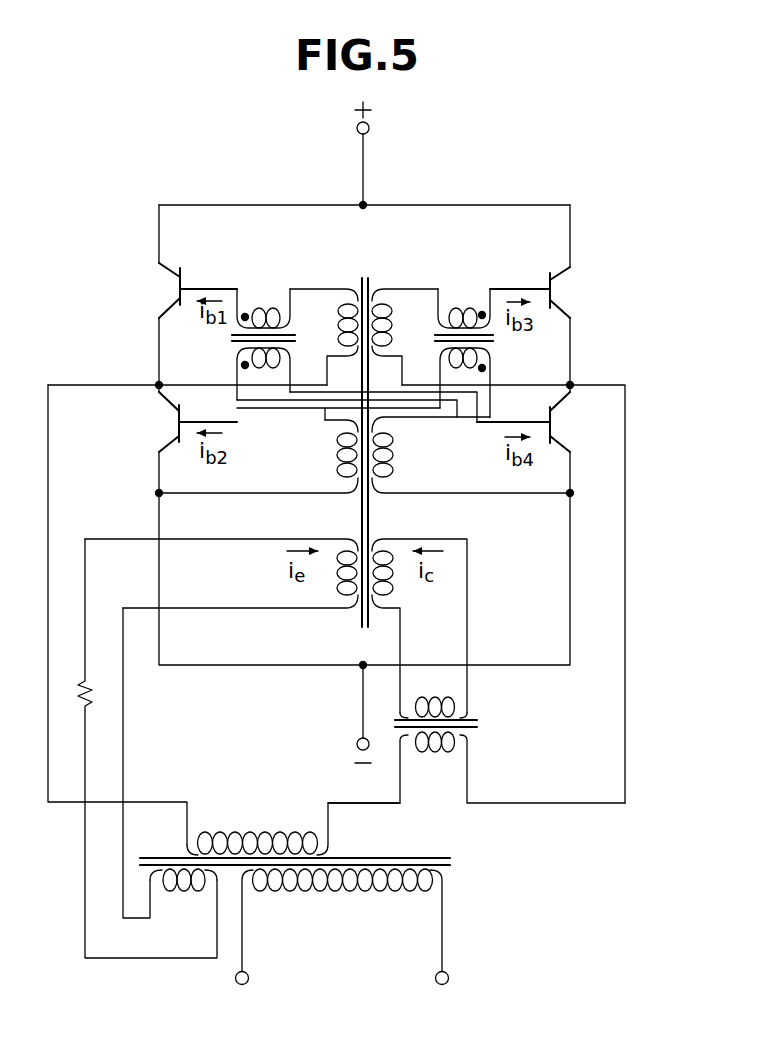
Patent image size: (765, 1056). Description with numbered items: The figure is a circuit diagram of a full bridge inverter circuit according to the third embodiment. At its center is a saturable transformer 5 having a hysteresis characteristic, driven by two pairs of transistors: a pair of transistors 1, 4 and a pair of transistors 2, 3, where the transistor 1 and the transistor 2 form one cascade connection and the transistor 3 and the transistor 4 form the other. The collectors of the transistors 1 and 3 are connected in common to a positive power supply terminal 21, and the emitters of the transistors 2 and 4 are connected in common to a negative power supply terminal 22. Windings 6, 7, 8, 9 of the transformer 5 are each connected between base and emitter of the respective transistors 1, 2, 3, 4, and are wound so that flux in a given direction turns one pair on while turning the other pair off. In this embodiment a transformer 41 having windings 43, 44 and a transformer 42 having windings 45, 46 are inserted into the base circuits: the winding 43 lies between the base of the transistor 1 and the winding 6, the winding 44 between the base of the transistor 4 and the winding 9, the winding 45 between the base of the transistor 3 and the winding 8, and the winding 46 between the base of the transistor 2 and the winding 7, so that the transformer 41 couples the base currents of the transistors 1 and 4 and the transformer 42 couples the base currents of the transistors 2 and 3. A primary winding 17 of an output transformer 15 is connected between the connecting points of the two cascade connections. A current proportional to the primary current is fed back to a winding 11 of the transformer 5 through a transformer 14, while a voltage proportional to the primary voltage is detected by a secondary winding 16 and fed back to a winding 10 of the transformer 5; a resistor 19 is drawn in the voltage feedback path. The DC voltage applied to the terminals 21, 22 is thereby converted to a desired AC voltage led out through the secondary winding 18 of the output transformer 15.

The transistor 1 is at (173, 289).
The transistor 2 is at (173, 422).
The transistor 3 is at (556, 289).
The transistor 4 is at (556, 422).
The saturable transformer 5 is at (365, 277).
The winding 6 is at (340, 305).
The winding 7 is at (335, 466).
The winding 8 is at (391, 305).
The winding 9 is at (394, 467).
The winding 10 is at (337, 562).
The winding 11 is at (390, 562).
The transformer 14 is at (477, 722).
The output transformer 15 is at (451, 861).
The secondary winding 16 is at (176, 892).
The primary winding 17 is at (240, 835).
The secondary winding 18 is at (346, 892).
The resistor 19 is at (92, 700).
The positive power supply terminal 21 is at (370, 124).
The negative power supply terminal 22 is at (356, 744).
The transformer 41 is at (240, 339).
The transformer 42 is at (490, 339).
The winding 43 is at (262, 310).
The winding 44 is at (270, 364).
The winding 45 is at (466, 310).
The winding 46 is at (456, 364).